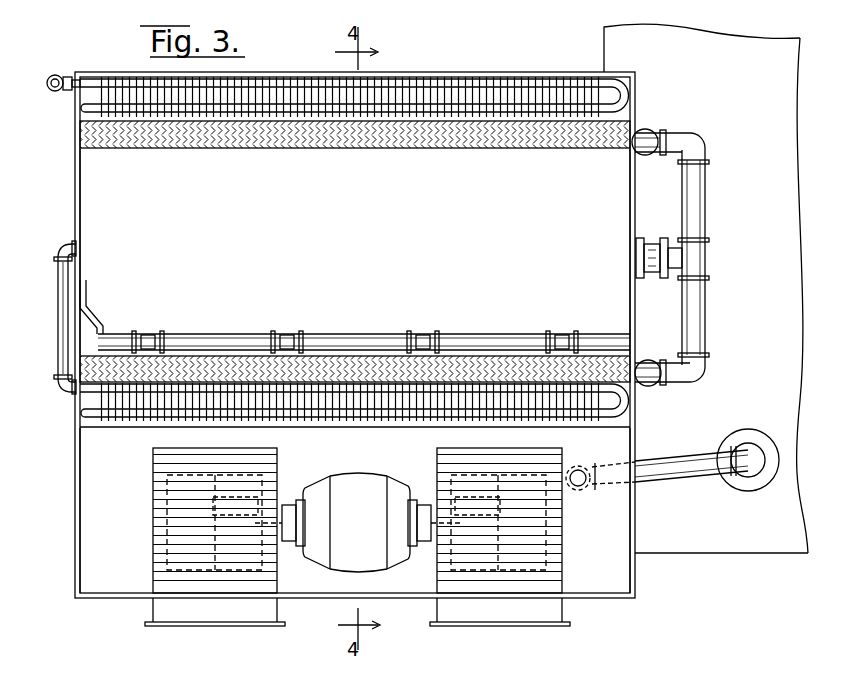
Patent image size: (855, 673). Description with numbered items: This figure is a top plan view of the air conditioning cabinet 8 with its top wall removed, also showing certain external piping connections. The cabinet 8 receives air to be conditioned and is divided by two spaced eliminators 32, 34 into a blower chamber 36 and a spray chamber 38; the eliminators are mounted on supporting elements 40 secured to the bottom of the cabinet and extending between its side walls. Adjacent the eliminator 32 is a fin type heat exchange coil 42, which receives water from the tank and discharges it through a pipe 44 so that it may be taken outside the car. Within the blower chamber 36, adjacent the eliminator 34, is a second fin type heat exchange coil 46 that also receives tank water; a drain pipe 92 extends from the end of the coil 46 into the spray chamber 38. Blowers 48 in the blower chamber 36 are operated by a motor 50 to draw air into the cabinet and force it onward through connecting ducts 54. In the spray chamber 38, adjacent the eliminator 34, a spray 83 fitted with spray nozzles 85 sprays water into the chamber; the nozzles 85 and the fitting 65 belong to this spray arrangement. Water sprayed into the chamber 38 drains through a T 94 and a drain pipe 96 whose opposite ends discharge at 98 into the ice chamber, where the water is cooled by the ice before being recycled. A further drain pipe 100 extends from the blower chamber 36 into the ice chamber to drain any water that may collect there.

The cabinet 8 is at (637, 582).
The eliminator 32 is at (402, 150).
The eliminator 34 is at (183, 362).
The blower chamber 36 is at (355, 510).
The spray chamber 38 is at (355, 252).
The supporting elements 40 is at (626, 437).
The heat exchange coil 42 is at (425, 82).
The pipe 44 is at (55, 74).
The heat exchange coil 46 is at (119, 430).
The blowers 48 is at (240, 500).
The motor 50 is at (356, 522).
The connecting ducts 54 is at (253, 615).
The spray nozzle 65 is at (286, 330).
The spray 83 is at (390, 334).
The spray nozzles 85 is at (426, 330).
The drain pipe 92 is at (60, 292).
The T 94 is at (672, 252).
The drain pipe 96 is at (706, 211).
The discharge ends 98 is at (651, 133).
The drain pipe 100 is at (686, 478).